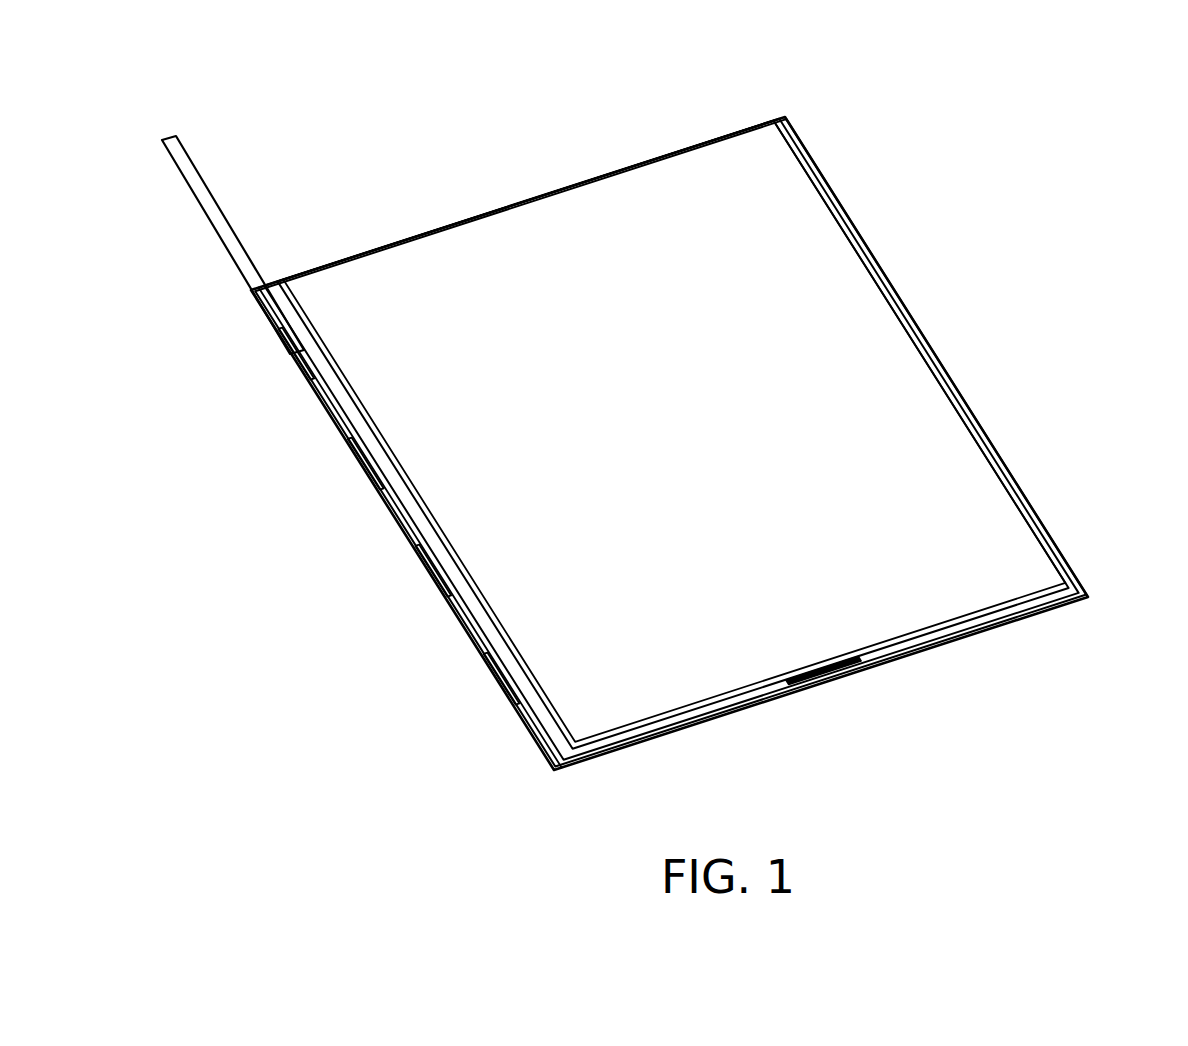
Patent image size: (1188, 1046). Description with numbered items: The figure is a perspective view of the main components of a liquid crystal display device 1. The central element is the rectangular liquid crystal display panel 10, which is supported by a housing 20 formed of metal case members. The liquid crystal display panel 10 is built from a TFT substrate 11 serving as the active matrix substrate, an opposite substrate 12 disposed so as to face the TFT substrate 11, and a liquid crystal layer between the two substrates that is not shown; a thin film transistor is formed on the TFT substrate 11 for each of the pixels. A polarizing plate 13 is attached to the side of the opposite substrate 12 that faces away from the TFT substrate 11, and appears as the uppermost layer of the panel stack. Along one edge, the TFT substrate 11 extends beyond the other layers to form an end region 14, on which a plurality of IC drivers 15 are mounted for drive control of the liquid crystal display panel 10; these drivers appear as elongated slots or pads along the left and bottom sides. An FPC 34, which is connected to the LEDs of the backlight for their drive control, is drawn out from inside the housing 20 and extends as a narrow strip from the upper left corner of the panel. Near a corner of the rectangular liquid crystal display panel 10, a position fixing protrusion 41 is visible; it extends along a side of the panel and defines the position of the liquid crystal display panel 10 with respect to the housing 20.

The liquid crystal display device 1 is at (503, 50).
The liquid crystal display panel 10 is at (268, 318).
The TFT substrate 11 is at (559, 746).
The opposite substrate 12 is at (547, 712).
The polarizing plate 13 is at (866, 300).
The end region 14 is at (480, 627).
The IC drivers 15 is at (388, 478).
The housing 20 is at (322, 411).
The FPC 34 is at (185, 169).
The position fixing protrusion 41 is at (1133, 598).